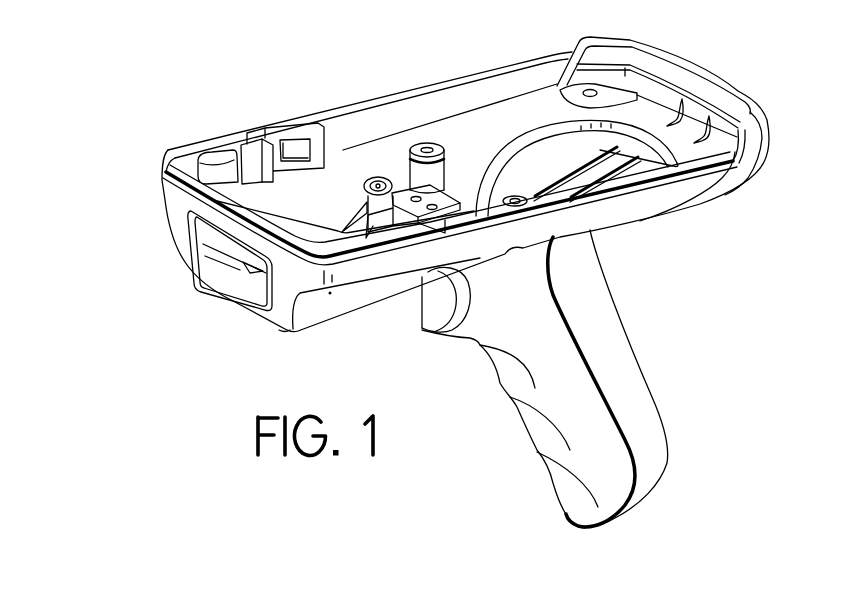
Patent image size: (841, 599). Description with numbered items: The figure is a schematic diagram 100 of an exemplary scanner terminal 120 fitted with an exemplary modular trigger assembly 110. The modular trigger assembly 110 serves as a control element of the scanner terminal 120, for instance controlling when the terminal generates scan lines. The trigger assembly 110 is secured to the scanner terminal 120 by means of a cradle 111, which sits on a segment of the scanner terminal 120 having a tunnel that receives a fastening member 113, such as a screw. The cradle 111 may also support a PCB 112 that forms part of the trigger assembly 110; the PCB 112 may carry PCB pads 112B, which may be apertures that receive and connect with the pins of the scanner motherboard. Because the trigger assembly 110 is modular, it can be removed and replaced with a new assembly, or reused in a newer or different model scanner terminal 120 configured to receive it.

The schematic diagram 100 is at (104, 84).
The modular trigger assembly 110 is at (419, 318).
The cradle 111 is at (376, 182).
The PCB 112 is at (445, 197).
The PCB pads 112B is at (432, 157).
The fastening member 113 is at (416, 197).
The scanner terminal 120 is at (736, 73).